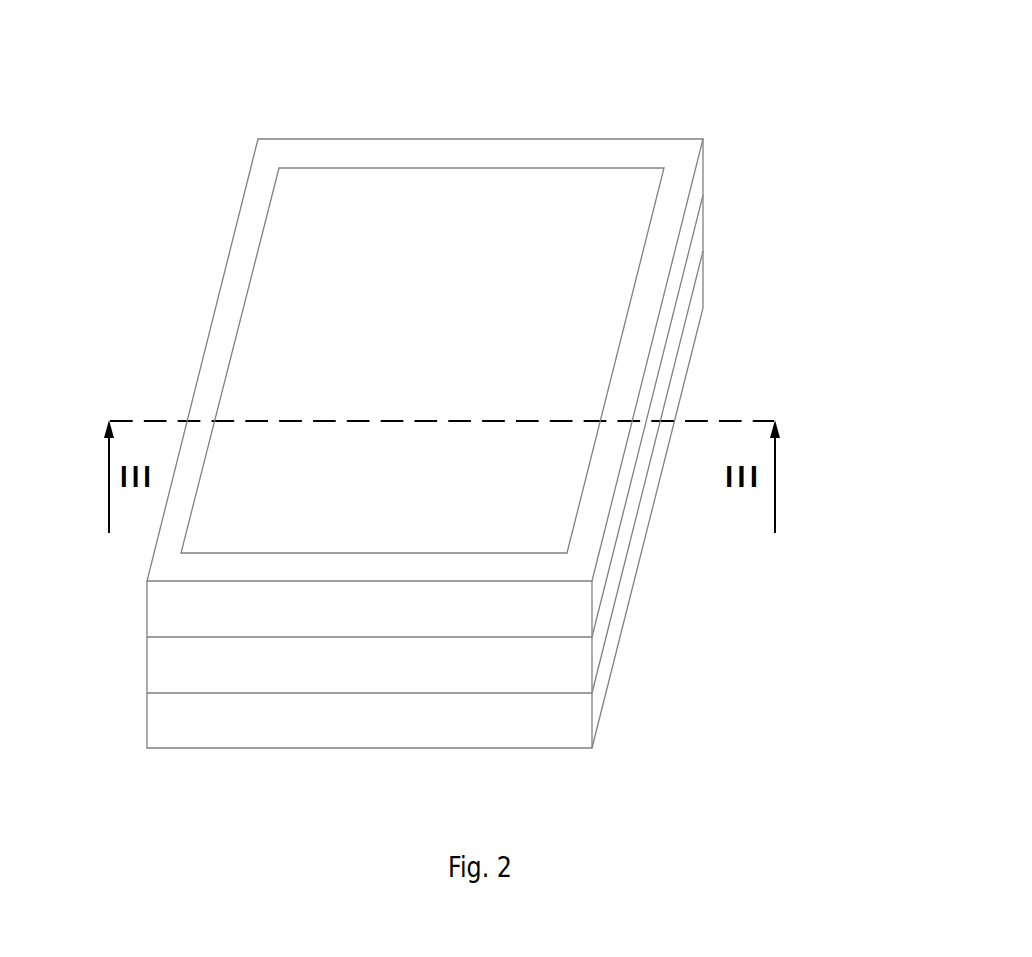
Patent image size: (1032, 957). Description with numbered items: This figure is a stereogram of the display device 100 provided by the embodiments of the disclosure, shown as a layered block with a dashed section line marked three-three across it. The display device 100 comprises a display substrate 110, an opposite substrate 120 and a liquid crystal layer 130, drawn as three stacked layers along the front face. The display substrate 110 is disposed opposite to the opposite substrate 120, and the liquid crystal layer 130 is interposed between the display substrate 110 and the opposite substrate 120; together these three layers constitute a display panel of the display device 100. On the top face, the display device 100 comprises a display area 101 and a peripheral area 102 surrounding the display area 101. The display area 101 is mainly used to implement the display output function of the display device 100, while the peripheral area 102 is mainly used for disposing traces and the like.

The display device 100 is at (530, 62).
The display area 101 is at (585, 290).
The peripheral area 102 is at (626, 383).
The display substrate 110 is at (492, 723).
The opposite substrate 120 is at (558, 614).
The liquid crystal layer 130 is at (547, 660).